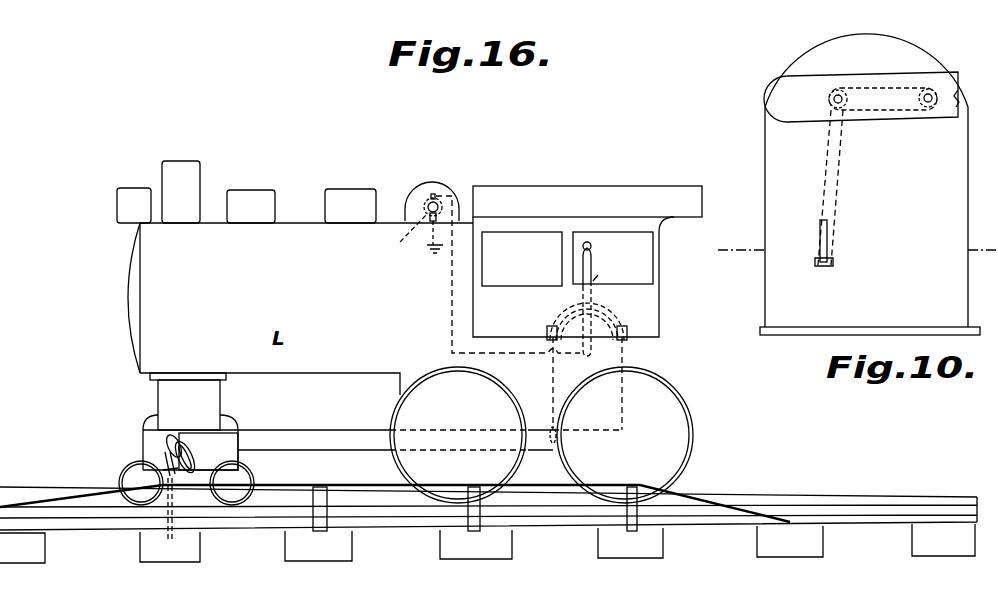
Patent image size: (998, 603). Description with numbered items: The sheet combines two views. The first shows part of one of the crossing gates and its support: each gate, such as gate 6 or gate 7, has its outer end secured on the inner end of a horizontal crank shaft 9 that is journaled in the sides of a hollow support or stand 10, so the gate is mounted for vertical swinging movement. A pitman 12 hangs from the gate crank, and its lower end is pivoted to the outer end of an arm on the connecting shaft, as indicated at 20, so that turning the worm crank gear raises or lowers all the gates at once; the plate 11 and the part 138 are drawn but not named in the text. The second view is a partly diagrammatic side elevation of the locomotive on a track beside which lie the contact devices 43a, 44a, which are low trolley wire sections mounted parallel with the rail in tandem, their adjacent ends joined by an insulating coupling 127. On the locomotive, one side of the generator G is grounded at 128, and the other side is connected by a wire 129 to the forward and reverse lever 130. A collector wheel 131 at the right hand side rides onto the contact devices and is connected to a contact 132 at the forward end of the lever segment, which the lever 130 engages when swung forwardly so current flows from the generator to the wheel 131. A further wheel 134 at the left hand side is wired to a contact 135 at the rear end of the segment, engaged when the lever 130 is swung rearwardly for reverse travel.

In FIG. 10, the gate 6 is at (958, 80).
In FIG. 10, the horizontal crank shaft 9 is at (928, 107).
In FIG. 10, the hollow support or stand 10 is at (968, 198).
In FIG. 10, the pivoted plate 11 is at (873, 98).
In FIG. 10, the pitman 12 is at (838, 153).
In FIG. 10, the pivot of arm to pitman 20 is at (830, 262).
In FIG. 16, the gate 7 is at (428, 230).
In FIG. 16, the generator G is at (405, 236).
In FIG. 16, the insulating coupling 127 is at (397, 488).
In FIG. 16, the ground connection 128 is at (423, 285).
In FIG. 16, the wire 129 is at (495, 281).
In FIG. 16, the forward and reverse lever 130 is at (607, 299).
In FIG. 16, the collector wheel 131 is at (171, 517).
In FIG. 16, the contact 132 is at (515, 331).
In FIG. 16, the wheel 134 is at (195, 470).
In FIG. 16, the contact 135 is at (628, 323).
In FIG. 16, the intermediate contact segment 138 is at (612, 316).
In FIG. 16, the contact device 43a is at (313, 487).
In FIG. 16, the contact device 44a is at (476, 487).